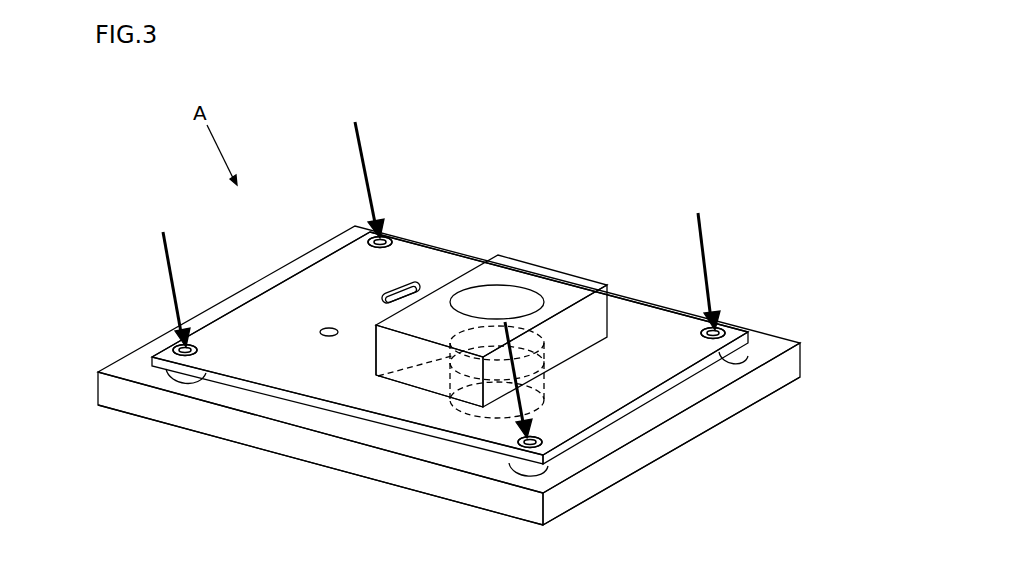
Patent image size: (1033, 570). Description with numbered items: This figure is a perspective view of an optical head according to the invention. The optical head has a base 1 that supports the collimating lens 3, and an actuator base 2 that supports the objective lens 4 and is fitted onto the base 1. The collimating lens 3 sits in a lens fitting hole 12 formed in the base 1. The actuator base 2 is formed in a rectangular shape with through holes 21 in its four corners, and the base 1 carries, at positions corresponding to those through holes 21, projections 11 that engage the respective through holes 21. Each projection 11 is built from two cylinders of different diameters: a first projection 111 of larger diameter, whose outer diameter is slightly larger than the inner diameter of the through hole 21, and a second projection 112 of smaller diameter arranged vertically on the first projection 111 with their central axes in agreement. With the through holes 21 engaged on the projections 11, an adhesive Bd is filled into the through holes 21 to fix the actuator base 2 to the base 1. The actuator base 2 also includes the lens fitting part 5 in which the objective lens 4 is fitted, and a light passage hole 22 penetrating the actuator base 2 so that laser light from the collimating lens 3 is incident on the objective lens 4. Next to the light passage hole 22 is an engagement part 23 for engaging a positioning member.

The base 1 is at (135, 365).
The projection 11 is at (155, 384).
The first projection 111 is at (180, 380).
The second projection 112 is at (178, 341).
The lens fitting hole 12 is at (370, 232).
The actuator base 2 is at (457, 262).
The through hole 21 is at (198, 345).
The light passage hole 22 is at (377, 378).
The engagement part 23 is at (381, 300).
The collimating lens 3 is at (472, 417).
The objective lens 4 is at (510, 302).
The lens fitting part 5 is at (597, 315).
The adhesive Bd is at (363, 142).